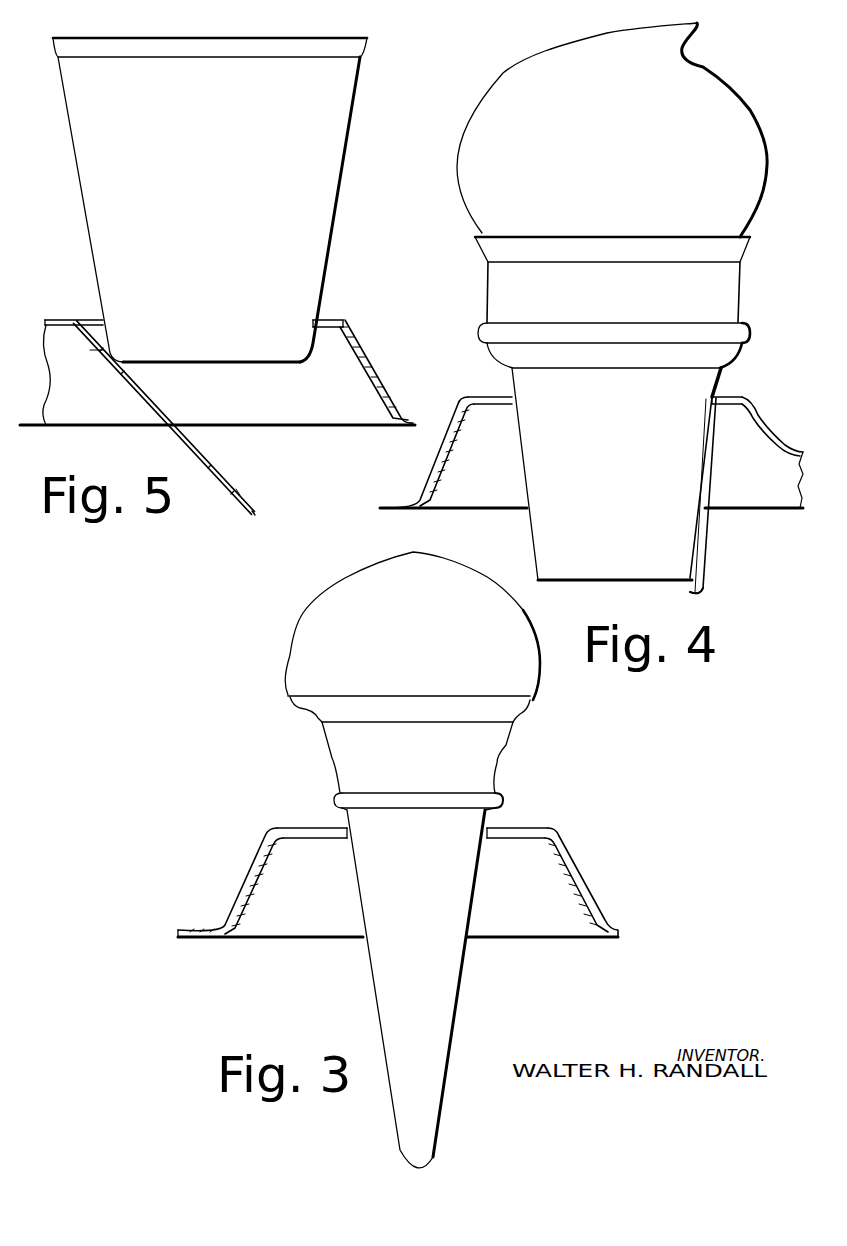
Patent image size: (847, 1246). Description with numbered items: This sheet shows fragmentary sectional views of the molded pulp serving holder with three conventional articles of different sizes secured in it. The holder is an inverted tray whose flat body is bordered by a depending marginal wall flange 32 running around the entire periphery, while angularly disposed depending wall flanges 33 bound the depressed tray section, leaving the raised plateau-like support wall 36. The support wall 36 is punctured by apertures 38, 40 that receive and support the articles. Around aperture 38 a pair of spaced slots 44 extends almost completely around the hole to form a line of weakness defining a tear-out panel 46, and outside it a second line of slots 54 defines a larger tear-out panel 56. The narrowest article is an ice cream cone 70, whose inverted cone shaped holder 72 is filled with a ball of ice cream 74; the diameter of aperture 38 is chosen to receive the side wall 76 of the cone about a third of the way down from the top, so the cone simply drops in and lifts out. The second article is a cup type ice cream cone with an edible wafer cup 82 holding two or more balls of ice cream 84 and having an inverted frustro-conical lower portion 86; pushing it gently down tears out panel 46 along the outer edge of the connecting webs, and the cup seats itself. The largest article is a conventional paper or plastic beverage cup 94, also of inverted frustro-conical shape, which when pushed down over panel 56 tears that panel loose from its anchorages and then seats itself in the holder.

In FIG. 5, the depending marginal wall flange 32 is at (380, 352).
In FIG. 3, the depending marginal wall flange 32 is at (577, 850).
In FIG. 4, the depending wall flanges 33 is at (447, 442).
In FIG. 3, the depending wall flanges 33 is at (243, 870).
In FIG. 5, the support wall 36 is at (60, 318).
In FIG. 5, the aperture 38 is at (212, 467).
In FIG. 4, the aperture 38 is at (703, 553).
In FIG. 3, the aperture 40 is at (348, 832).
In FIG. 5, the slots 44 is at (238, 492).
In FIG. 4, the slots 44 is at (722, 390).
In FIG. 3, the slots 44 is at (518, 827).
In FIG. 4, the tear-out panel 46 is at (700, 583).
In FIG. 5, the slots 54 is at (338, 318).
In FIG. 4, the slots 54 is at (742, 398).
In FIG. 3, the slots 54 is at (550, 827).
In FIG. 5, the second tear-out panel 56 is at (90, 350).
In FIG. 3, the ice cream cone 70 is at (295, 713).
In FIG. 3, the inverted cone shaped holder 72 is at (332, 758).
In FIG. 3, the ball of ice cream 74 is at (292, 653).
In FIG. 3, the side wall of the cone 76 is at (352, 833).
In FIG. 4, the cup 82 is at (480, 338).
In FIG. 4, the balls of ice cream 84 is at (480, 110).
In FIG. 4, the lower portion 86 is at (520, 467).
In FIG. 5, the cup 94 is at (82, 200).